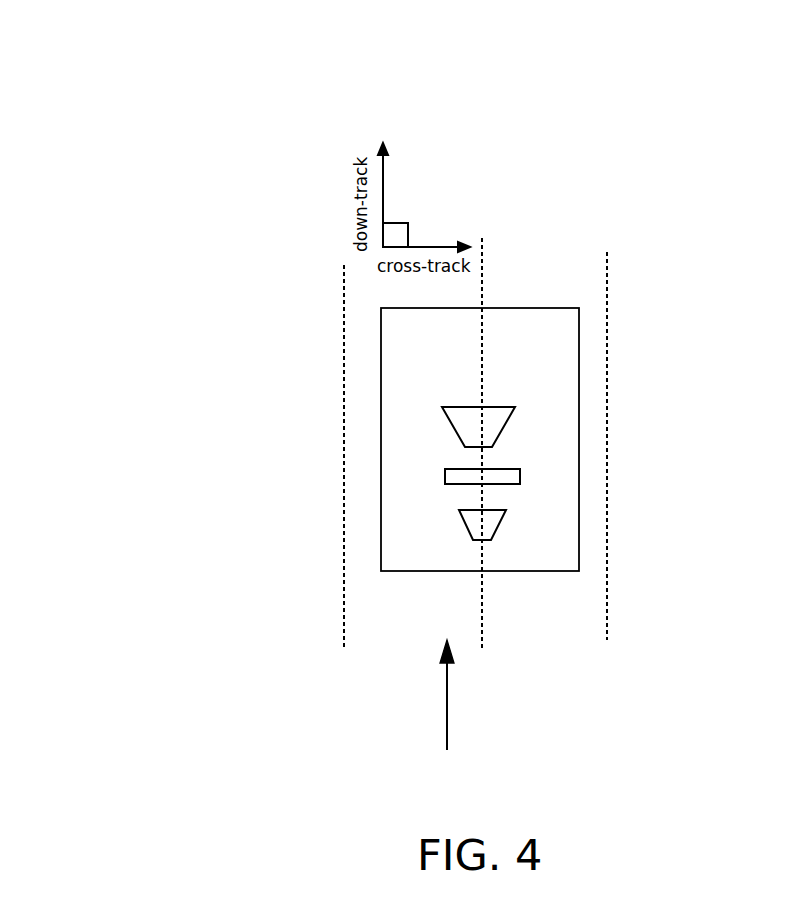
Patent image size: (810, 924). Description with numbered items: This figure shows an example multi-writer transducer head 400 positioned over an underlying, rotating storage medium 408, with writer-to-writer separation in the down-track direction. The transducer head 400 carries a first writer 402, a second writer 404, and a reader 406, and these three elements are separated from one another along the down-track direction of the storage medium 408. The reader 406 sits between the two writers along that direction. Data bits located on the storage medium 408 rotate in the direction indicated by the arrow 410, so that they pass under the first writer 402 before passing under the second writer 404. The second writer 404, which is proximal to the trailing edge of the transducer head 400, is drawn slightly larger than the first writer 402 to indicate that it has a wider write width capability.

The transducer head 400 is at (452, 336).
The first writer 402 is at (497, 530).
The second writer 404 is at (500, 418).
The reader 406 is at (520, 475).
The storage medium 408 is at (570, 279).
The arrow 410 is at (447, 713).